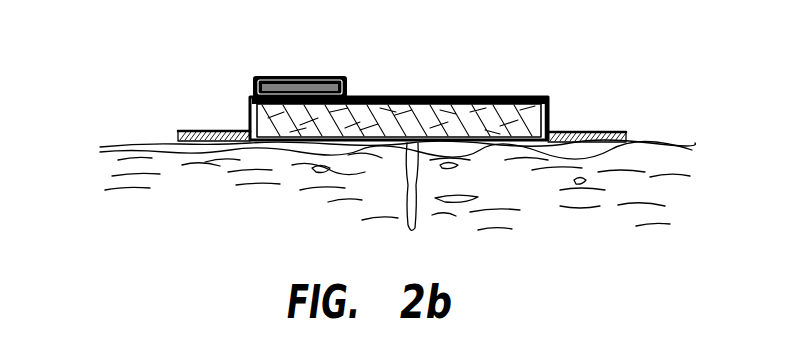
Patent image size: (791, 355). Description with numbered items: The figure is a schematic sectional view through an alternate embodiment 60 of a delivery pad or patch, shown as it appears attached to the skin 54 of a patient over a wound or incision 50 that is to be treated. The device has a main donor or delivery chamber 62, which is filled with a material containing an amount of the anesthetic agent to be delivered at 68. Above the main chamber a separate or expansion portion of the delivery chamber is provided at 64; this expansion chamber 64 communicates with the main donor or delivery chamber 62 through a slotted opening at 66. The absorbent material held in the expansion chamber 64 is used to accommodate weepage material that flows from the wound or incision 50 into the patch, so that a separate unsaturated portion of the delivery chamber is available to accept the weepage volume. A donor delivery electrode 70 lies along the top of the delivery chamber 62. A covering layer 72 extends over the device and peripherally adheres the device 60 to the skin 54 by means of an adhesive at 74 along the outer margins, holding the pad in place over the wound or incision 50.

The wound or incision 50 is at (420, 221).
The skin 54 is at (653, 152).
The alternate embodiment 60 is at (419, 129).
The donor or delivery chamber 62 is at (499, 100).
The expansion portion of the delivery chamber 64 is at (318, 78).
The slotted opening 66 is at (282, 105).
The material containing anesthetic agent 68 is at (300, 125).
The donor delivery electrode 70 is at (399, 100).
The covering layer 72 is at (553, 104).
The adhesive 74 is at (200, 143).